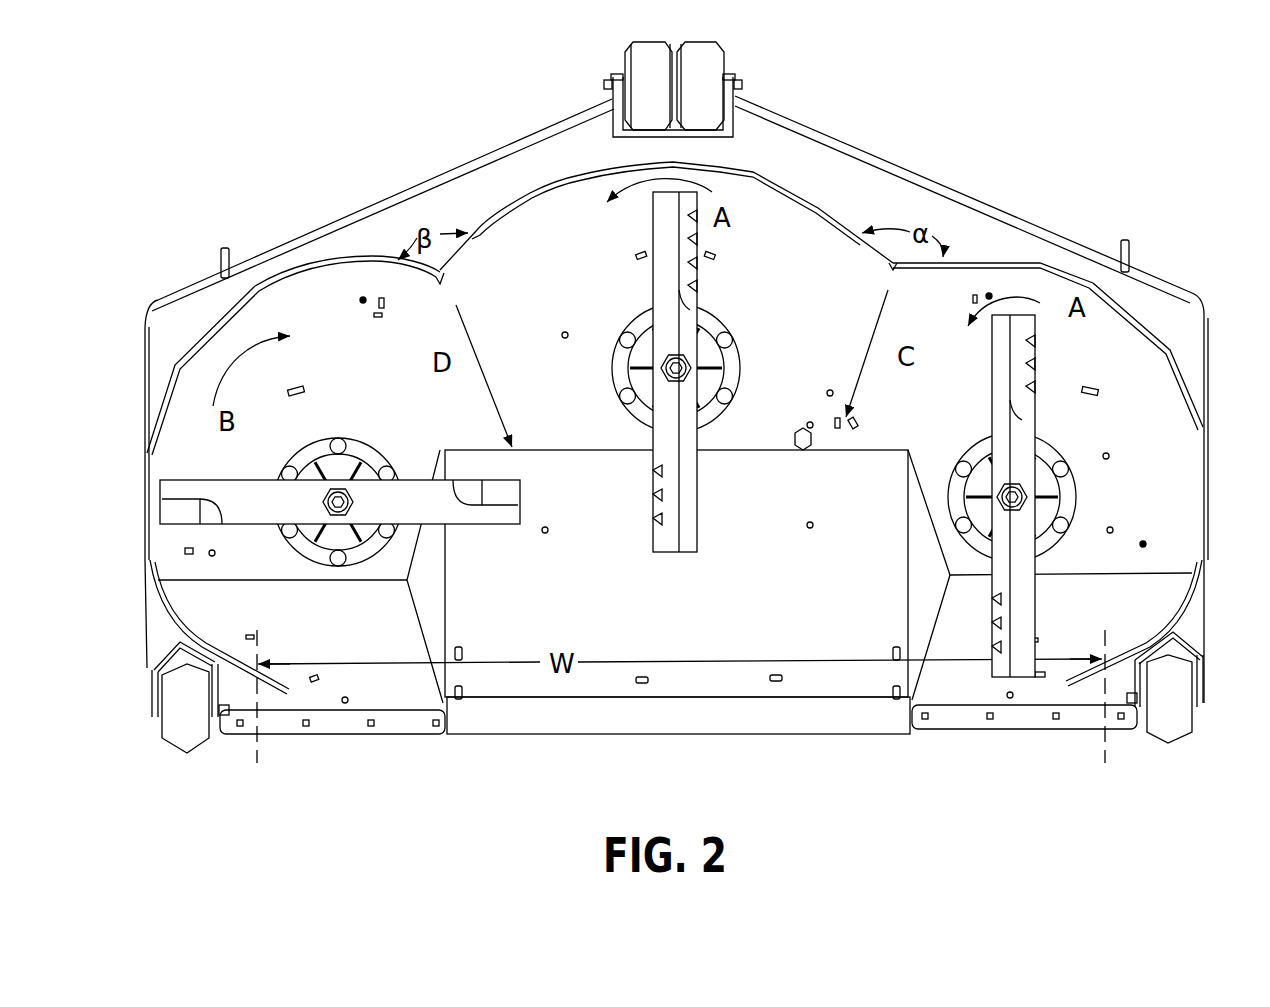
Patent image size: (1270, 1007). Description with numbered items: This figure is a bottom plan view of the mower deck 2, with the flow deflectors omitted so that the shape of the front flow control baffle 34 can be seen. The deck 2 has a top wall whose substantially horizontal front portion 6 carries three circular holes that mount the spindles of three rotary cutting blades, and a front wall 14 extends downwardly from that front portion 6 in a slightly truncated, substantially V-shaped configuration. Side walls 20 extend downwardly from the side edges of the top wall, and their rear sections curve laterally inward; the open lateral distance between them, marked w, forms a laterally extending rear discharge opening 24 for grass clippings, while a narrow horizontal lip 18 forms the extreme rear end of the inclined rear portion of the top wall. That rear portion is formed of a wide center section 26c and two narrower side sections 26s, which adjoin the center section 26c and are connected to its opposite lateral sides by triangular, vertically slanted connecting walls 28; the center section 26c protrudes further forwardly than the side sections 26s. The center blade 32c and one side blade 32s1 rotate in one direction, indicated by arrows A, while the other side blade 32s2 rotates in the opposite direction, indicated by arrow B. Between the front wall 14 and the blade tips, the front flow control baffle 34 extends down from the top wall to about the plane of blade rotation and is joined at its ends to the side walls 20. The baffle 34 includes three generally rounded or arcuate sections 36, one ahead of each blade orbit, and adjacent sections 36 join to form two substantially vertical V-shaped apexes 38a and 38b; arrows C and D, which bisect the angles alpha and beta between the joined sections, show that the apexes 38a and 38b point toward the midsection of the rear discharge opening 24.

The deck 2 is at (900, 96).
The front portion of top wall 6 is at (585, 165).
The front wall 14 is at (813, 128).
The lip 18 is at (400, 726).
The side walls 20 is at (145, 432).
The rear discharge opening 24 is at (688, 744).
The center section 26c is at (783, 628).
The side sections 26s is at (370, 636).
The connecting walls 28 is at (428, 586).
The center blade 32c is at (678, 312).
The side blade 32s1 is at (1015, 444).
The side blade 32s2 is at (440, 514).
The front flow control baffle 34 is at (513, 192).
The baffle sections 36 is at (276, 280).
The apex 38a is at (891, 268).
The apex 38b is at (442, 276).